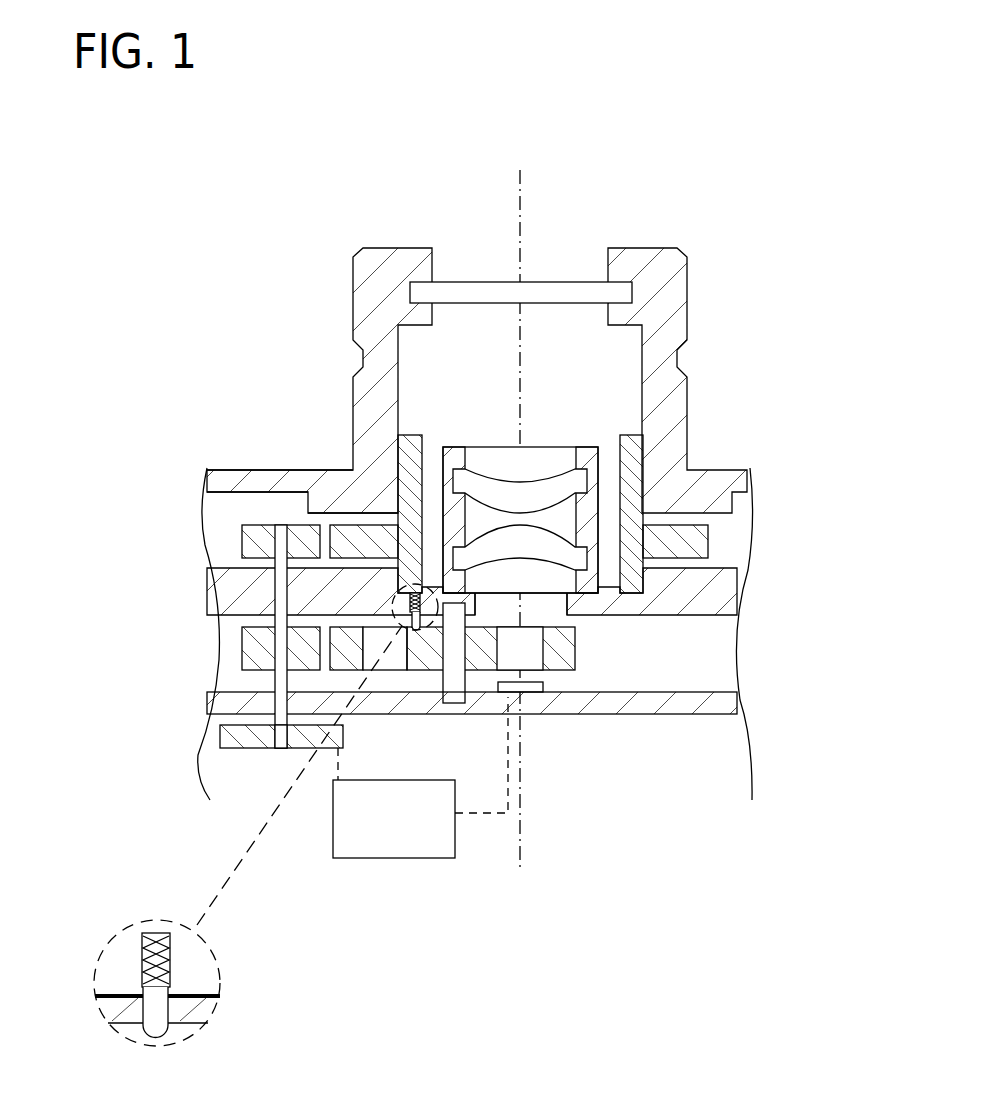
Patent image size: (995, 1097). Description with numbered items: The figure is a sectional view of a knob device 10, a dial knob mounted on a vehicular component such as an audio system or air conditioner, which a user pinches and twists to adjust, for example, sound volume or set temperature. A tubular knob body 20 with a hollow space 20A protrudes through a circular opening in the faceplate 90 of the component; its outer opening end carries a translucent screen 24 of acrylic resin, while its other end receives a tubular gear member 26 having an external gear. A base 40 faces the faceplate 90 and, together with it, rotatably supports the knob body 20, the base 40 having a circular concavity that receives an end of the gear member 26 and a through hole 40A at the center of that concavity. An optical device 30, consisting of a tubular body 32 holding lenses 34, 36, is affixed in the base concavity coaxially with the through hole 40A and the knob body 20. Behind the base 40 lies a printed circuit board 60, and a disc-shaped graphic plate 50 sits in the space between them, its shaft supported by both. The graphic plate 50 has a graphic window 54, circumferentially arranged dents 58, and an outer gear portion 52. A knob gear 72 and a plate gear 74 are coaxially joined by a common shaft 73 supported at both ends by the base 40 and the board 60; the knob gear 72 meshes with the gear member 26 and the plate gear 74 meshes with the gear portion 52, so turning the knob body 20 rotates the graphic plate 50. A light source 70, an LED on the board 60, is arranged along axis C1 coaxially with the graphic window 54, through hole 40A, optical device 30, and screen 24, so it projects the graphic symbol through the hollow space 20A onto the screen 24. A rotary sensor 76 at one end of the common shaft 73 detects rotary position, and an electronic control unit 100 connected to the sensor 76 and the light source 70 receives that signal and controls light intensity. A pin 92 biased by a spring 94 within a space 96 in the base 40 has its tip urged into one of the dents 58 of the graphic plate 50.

The knob device 10 is at (717, 142).
The axis C1 is at (518, 207).
The knob body 20 is at (677, 282).
The hollow space 20A is at (452, 342).
The screen 24 is at (555, 287).
The gear member 26 is at (343, 537).
The optical device 30 is at (598, 438).
The tubular body 32 is at (652, 485).
The lens 34 is at (520, 491).
The lens 36 is at (520, 547).
The base 40 is at (233, 588).
The through hole 40A is at (540, 603).
The graphic plate 50 is at (553, 660).
The gear portion 52 is at (576, 666).
The graphic window 54 is at (532, 647).
The dent 58 is at (160, 1030).
The printed circuit board 60 is at (730, 707).
The light source 70 is at (520, 687).
The knob gear 72 is at (253, 548).
The common shaft 73 is at (280, 617).
The plate gear 74 is at (253, 657).
The rotary sensor 76 is at (242, 735).
The faceplate 90 is at (237, 478).
The pin 92 is at (167, 1012).
The spring 94 is at (167, 975).
The space 96 is at (170, 950).
The electronic control unit 100 is at (405, 858).